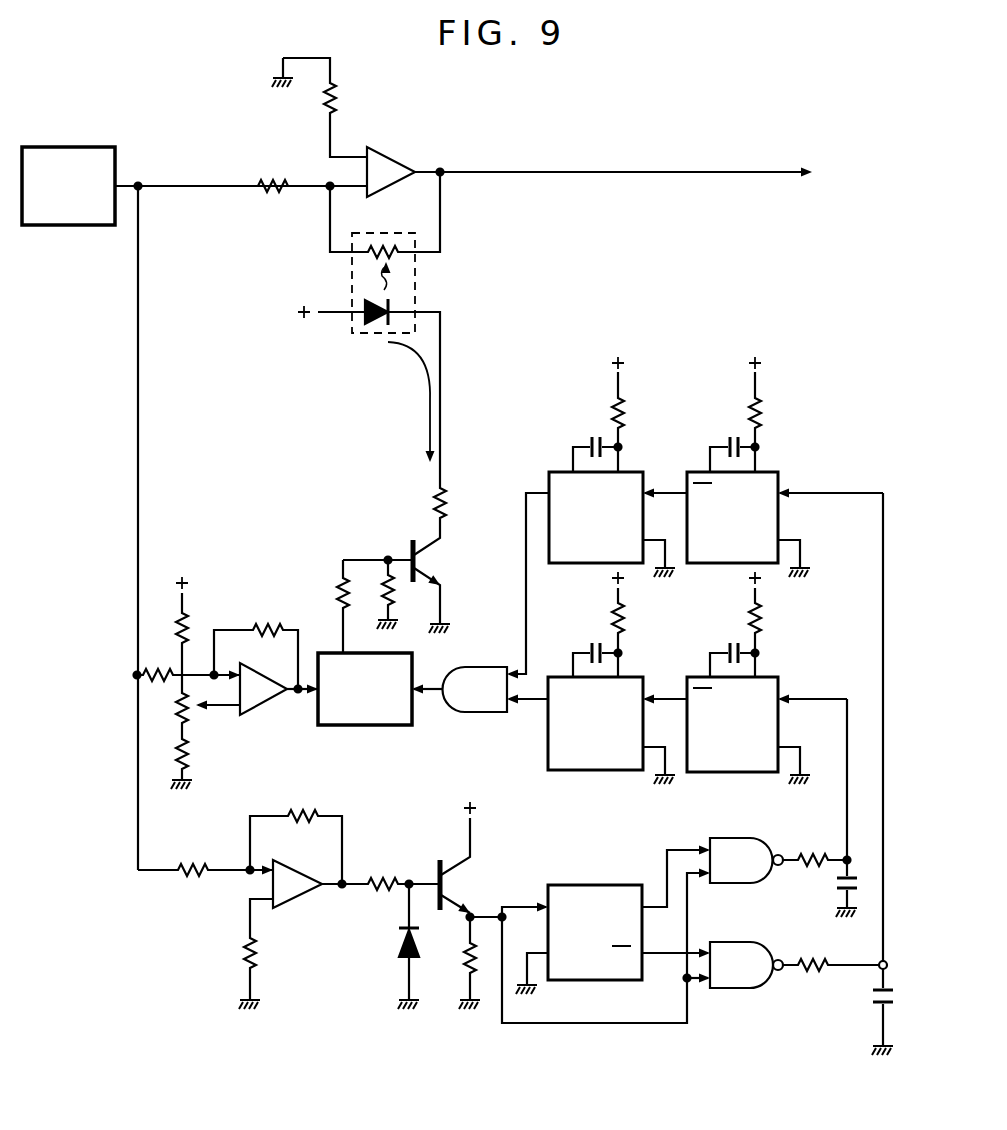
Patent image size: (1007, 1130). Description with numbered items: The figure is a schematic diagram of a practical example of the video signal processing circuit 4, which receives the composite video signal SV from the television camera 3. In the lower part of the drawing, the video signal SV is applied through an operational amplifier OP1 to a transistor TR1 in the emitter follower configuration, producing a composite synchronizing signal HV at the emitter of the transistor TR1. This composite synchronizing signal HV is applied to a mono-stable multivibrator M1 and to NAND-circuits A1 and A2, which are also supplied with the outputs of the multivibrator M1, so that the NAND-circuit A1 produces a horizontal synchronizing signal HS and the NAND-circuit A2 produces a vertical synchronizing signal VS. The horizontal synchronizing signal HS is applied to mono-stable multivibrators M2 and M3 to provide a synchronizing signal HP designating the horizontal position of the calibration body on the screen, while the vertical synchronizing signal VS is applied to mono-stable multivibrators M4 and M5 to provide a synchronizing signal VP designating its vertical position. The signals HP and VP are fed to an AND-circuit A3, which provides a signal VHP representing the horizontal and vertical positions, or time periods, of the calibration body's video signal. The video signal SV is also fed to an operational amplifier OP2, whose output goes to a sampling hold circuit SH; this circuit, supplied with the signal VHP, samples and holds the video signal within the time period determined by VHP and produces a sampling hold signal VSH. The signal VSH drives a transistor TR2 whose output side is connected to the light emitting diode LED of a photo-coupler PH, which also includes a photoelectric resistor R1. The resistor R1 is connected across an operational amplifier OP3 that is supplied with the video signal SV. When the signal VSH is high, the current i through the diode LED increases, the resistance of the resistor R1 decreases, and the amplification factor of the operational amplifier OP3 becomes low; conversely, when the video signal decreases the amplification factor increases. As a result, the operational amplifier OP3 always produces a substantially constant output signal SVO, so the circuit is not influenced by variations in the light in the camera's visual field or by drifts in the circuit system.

The television camera 3 is at (82, 227).
The composite video signal SV is at (142, 185).
The operational amplifier OP3 is at (400, 157).
The output signal SVO is at (548, 159).
The video signal processing circuit 4 is at (702, 137).
The resistor R1 is at (386, 238).
The photo-coupler PH is at (410, 292).
The light emitting diode LED is at (376, 356).
The current i is at (428, 412).
The transistor TR2 is at (420, 562).
The sampling hold signal VSH is at (343, 622).
The signal VHP is at (440, 668).
The synchronizing signal VP is at (526, 612).
The mono-stable multivibrator M5 is at (640, 470).
The mono-stable multivibrator M4 is at (780, 470).
The vertical synchronizing signal VS is at (832, 495).
The operational amplifier OP2 is at (272, 702).
The sampling hold circuit SH is at (382, 727).
The AND-circuit A3 is at (452, 714).
The synchronizing signal HP is at (520, 702).
The mono-stable multivibrator M3 is at (600, 771).
The mono-stable multivibrator M2 is at (746, 773).
The horizontal synchronizing signal HS is at (847, 724).
The transistor TR1 is at (434, 846).
The composite synchronizing signal HV is at (488, 914).
The mono-stable multivibrator M1 is at (584, 884).
The NAND-circuit A1 is at (745, 884).
The NAND-circuit A2 is at (745, 990).
The operational amplifier OP1 is at (306, 900).